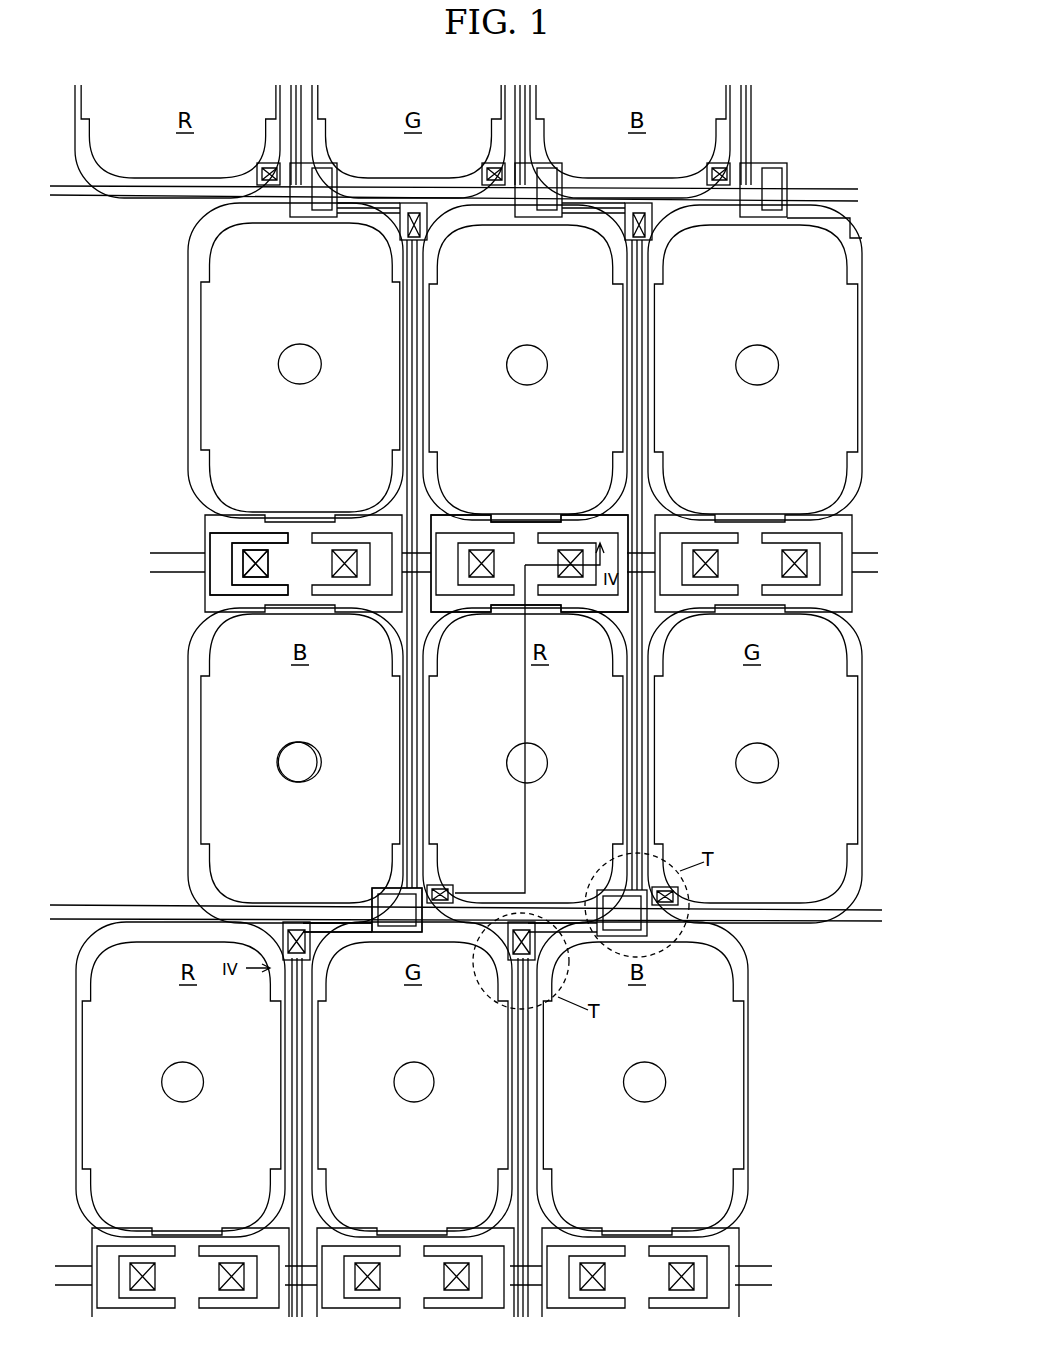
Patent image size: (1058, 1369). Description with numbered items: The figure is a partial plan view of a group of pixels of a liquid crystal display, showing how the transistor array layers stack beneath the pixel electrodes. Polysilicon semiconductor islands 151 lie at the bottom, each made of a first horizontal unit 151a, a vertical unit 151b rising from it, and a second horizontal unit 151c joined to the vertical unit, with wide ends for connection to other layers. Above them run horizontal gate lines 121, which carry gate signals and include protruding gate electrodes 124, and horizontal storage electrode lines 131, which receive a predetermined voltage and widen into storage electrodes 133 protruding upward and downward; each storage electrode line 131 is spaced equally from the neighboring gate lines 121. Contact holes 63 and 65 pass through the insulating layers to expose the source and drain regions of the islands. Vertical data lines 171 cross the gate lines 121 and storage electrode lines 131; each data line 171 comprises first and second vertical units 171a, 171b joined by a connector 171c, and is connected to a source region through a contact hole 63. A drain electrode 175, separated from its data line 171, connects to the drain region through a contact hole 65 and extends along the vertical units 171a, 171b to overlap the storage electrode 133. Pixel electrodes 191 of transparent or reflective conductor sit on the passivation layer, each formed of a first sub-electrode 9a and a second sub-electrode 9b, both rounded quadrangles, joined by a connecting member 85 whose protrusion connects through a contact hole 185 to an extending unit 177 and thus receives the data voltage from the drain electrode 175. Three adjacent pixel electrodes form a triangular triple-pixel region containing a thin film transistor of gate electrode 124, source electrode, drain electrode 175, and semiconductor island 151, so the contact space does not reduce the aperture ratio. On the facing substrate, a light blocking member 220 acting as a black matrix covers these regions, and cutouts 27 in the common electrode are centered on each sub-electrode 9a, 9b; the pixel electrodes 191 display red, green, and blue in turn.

The gate line 121 is at (80, 905).
The gate electrode 124 is at (392, 888).
The storage electrode line 131 is at (880, 572).
The storage electrode 133 is at (448, 533).
The semiconductor island 151 is at (115, 800).
The first horizontal unit 151a is at (295, 925).
The vertical unit 151b is at (335, 905).
The second horizontal unit 151c is at (390, 890).
The contact hole 63 is at (310, 948).
The contact hole 65 is at (445, 885).
The data line 171 is at (113, 258).
The first vertical unit 171a is at (403, 440).
The second vertical unit 171b is at (340, 196).
The connector 171c is at (330, 218).
The drain electrode 175 is at (446, 690).
The extending unit 177 is at (527, 535).
The contact hole 185 is at (257, 545).
The connecting member 85 is at (243, 563).
The pixel electrode 191 is at (93, 512).
The first sub-electrode 9a is at (188, 640).
The second sub-electrode 9b is at (188, 490).
The light blocking member 220 is at (418, 352).
The cutout 27 is at (302, 743).